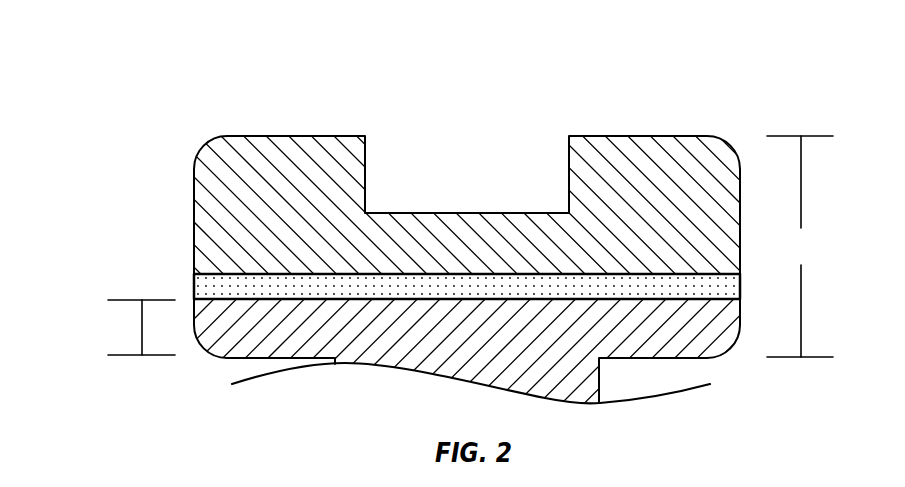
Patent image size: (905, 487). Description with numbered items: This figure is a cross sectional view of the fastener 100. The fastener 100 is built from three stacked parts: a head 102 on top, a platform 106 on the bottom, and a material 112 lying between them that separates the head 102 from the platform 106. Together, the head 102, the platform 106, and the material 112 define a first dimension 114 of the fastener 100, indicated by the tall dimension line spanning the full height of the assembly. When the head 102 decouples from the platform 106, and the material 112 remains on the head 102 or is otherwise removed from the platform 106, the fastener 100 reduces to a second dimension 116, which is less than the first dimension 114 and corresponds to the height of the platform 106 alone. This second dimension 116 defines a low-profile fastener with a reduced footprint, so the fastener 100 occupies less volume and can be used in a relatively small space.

The fastener 100 is at (210, 86).
The head 102 is at (486, 259).
The platform 106 is at (487, 341).
The material 112 is at (194, 285).
The first dimension 114 is at (800, 246).
The second dimension 116 is at (140, 330).